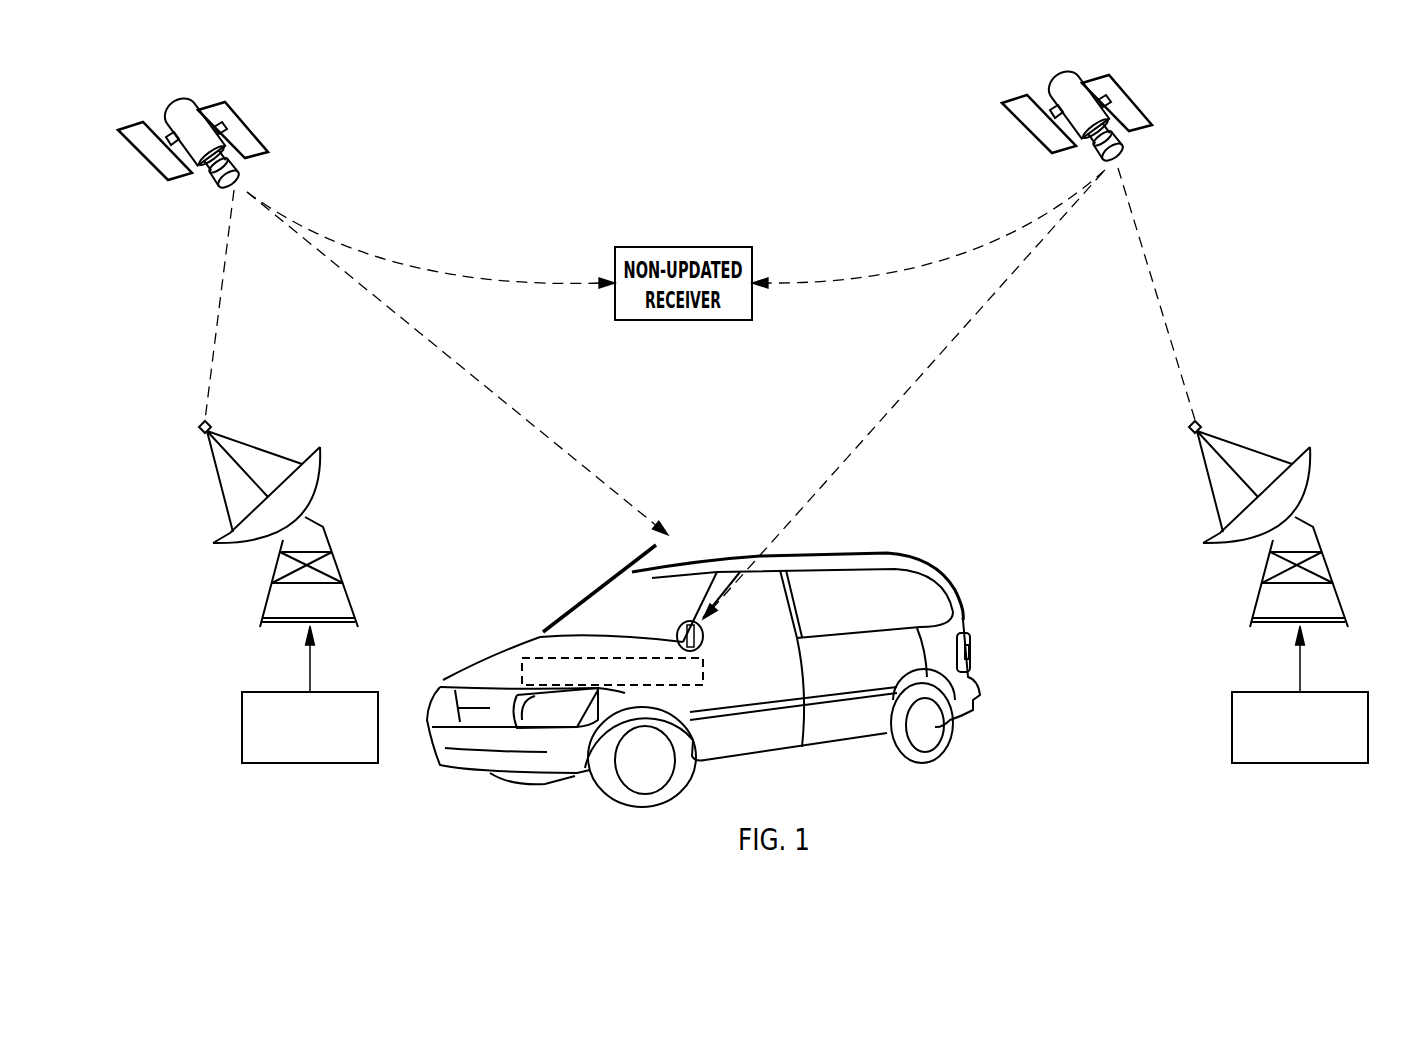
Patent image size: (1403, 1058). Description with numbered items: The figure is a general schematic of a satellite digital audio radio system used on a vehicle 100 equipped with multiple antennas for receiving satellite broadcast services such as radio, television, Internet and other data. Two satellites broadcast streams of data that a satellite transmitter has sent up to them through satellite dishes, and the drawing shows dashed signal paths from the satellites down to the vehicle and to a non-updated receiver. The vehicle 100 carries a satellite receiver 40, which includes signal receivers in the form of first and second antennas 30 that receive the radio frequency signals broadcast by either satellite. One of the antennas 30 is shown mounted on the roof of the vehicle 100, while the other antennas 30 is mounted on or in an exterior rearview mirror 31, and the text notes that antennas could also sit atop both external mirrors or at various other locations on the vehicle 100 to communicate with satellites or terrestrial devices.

The antenna 30 is at (647, 546).
The exterior rearview mirror 31 is at (698, 622).
The satellite receiver 40 is at (542, 645).
The vehicle 100 is at (742, 661).